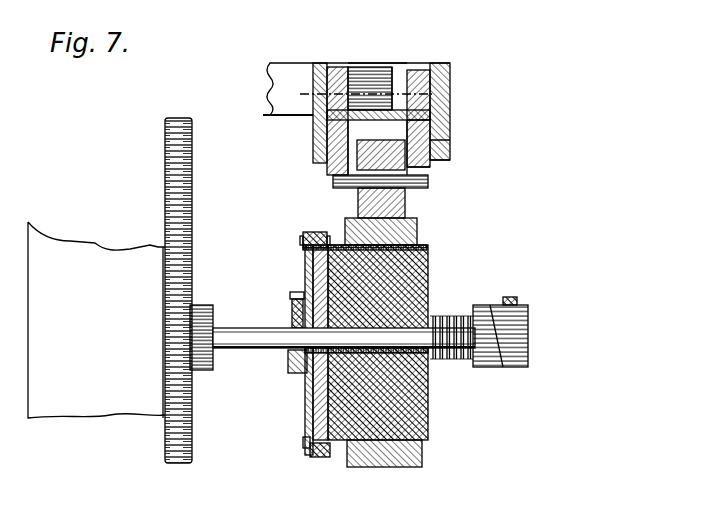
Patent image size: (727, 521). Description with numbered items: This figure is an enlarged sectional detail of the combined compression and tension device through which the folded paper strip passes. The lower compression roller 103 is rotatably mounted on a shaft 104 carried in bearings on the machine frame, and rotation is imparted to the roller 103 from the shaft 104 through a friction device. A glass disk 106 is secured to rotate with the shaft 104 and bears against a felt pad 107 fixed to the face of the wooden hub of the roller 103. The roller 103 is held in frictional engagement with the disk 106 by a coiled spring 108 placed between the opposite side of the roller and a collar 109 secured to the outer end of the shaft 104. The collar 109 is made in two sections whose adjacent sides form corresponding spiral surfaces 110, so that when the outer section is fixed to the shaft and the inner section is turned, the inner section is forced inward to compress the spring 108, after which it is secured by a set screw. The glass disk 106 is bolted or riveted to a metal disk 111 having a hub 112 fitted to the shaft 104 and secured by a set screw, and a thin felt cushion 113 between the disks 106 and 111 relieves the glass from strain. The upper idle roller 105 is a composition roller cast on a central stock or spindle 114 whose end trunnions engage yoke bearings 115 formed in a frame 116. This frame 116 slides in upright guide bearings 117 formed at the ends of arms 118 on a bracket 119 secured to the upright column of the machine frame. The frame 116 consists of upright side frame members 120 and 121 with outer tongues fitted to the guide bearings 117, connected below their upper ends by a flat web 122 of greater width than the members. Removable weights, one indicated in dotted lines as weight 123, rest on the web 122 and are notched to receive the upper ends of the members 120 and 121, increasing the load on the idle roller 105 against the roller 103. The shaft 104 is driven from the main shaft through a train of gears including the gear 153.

The lower compression roller 103 is at (429, 277).
The shaft 104 is at (256, 338).
The upper idle roller 105 is at (408, 207).
The glass disk 106 is at (318, 236).
The felt pad 107 is at (334, 448).
The coiled spring 108 is at (452, 363).
The collar 109 is at (580, 351).
The spiral surfaces 110 is at (494, 332).
The metal disk 111 is at (307, 419).
The hub 112 is at (290, 373).
The felt cushion 113 is at (312, 459).
The central stock or spindle 114 is at (430, 152).
The yoke bearings 115 is at (333, 182).
The frame 116 is at (400, 138).
The guide bearings 117 is at (331, 68).
The arms 118 is at (298, 137).
The bracket 119 is at (264, 94).
The side frame member 120 is at (452, 152).
The side frame member 121 is at (326, 147).
The flat web 122 is at (375, 110).
The weight 123 is at (367, 62).
The gear 153 is at (178, 441).